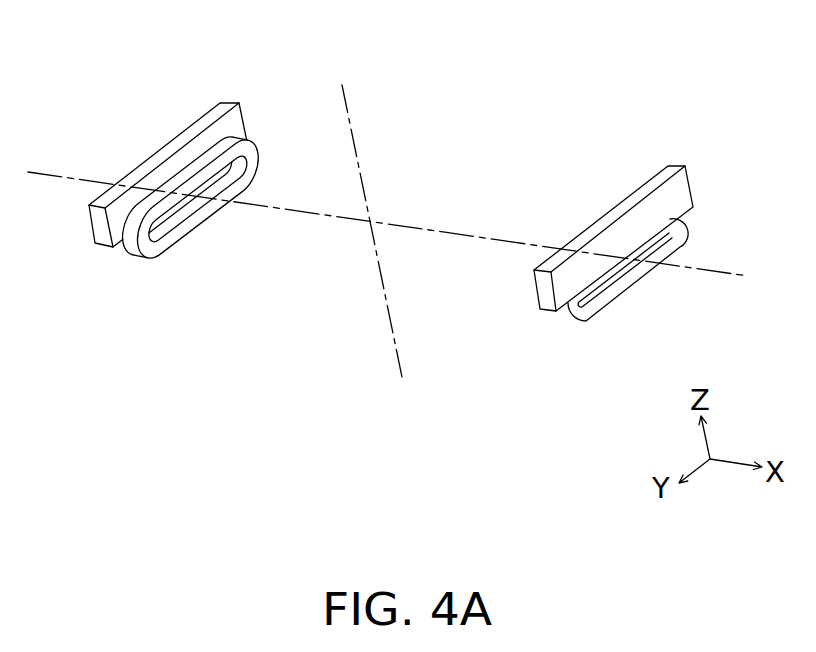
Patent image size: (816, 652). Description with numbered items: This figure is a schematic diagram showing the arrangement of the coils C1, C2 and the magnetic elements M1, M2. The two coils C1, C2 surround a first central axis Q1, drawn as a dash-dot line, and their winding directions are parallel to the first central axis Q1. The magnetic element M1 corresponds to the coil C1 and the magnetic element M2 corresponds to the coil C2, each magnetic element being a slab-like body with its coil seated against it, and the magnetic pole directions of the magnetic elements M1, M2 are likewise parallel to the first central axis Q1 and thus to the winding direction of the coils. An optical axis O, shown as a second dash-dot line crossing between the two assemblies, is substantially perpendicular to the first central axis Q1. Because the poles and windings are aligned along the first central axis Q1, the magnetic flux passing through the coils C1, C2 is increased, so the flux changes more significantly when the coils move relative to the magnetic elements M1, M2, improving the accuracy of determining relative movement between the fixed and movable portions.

The magnetic element M1 is at (665, 177).
The magnetic element M2 is at (219, 107).
The coil C1 is at (563, 314).
The coil C2 is at (134, 247).
The optical axis O is at (366, 217).
The first central axis Q1 is at (413, 235).